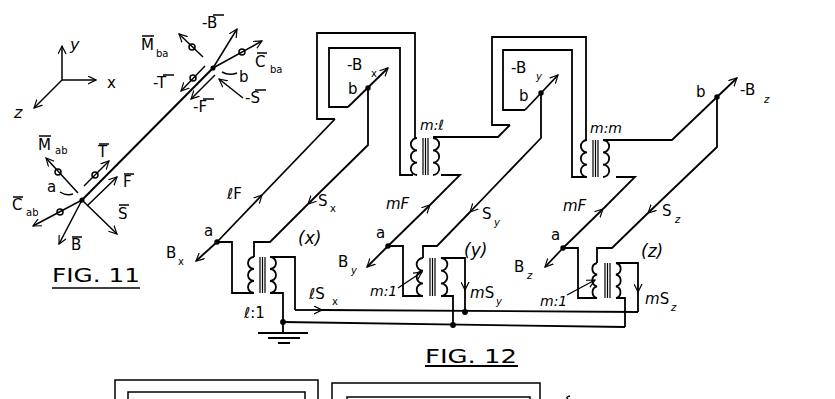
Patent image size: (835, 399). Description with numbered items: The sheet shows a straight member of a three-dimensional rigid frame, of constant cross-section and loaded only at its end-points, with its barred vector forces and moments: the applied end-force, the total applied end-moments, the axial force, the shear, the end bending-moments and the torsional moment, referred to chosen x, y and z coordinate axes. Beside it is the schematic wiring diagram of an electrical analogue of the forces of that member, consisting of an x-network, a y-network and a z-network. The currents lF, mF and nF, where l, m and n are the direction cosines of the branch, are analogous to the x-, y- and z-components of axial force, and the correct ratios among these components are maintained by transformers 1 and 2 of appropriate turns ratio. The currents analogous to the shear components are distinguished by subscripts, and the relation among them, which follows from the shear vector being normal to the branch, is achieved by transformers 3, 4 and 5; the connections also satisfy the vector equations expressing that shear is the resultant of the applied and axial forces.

The transformer 1 is at (432, 156).
The transformer 2 is at (601, 158).
The transformer 3 is at (269, 275).
The transformer 4 is at (438, 277).
The transformer 5 is at (612, 280).